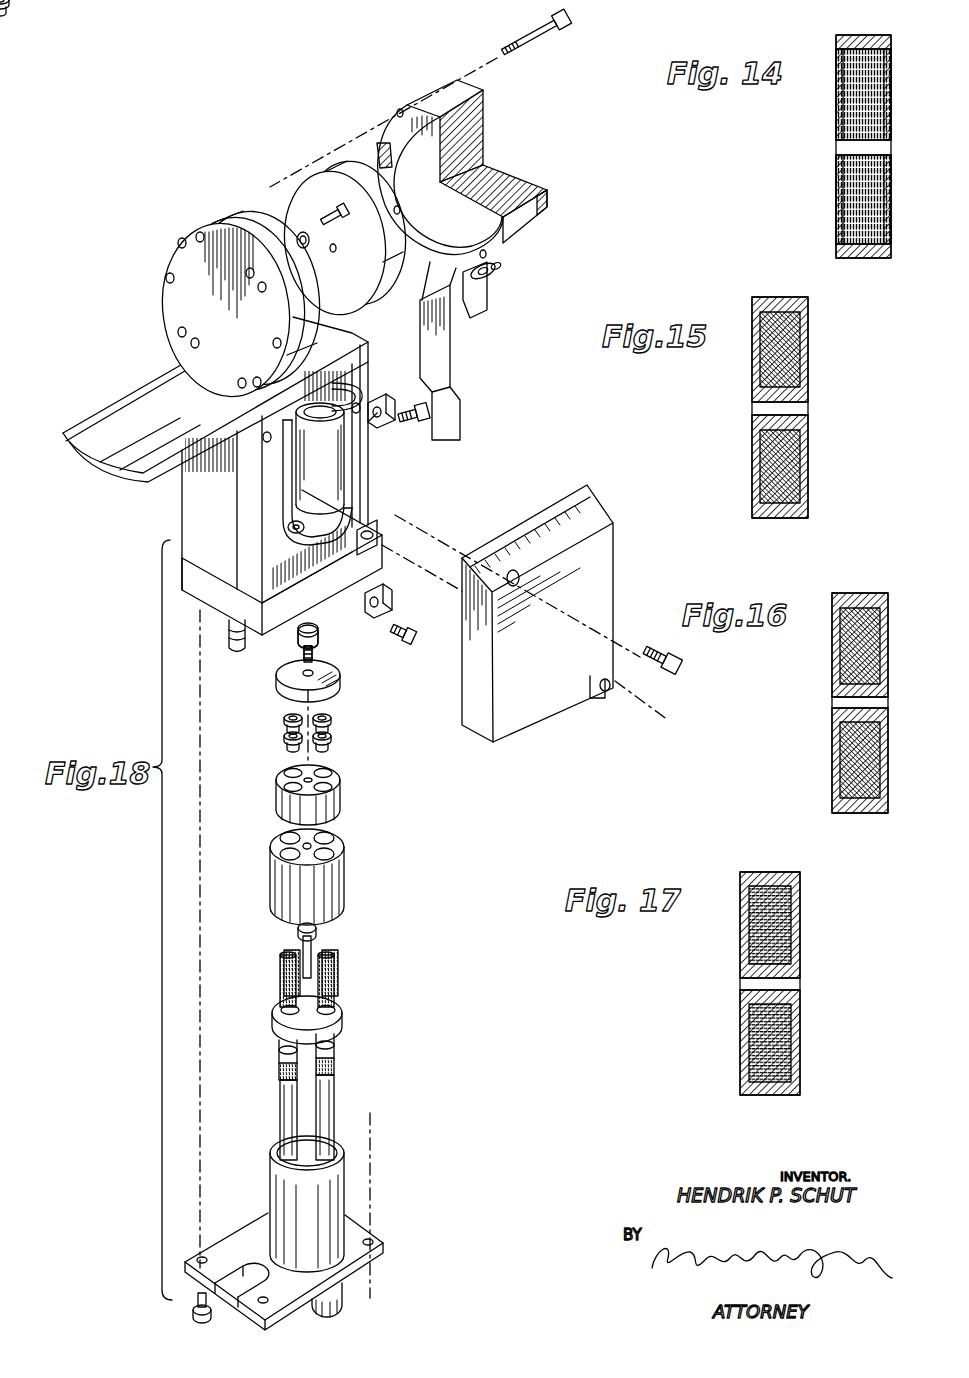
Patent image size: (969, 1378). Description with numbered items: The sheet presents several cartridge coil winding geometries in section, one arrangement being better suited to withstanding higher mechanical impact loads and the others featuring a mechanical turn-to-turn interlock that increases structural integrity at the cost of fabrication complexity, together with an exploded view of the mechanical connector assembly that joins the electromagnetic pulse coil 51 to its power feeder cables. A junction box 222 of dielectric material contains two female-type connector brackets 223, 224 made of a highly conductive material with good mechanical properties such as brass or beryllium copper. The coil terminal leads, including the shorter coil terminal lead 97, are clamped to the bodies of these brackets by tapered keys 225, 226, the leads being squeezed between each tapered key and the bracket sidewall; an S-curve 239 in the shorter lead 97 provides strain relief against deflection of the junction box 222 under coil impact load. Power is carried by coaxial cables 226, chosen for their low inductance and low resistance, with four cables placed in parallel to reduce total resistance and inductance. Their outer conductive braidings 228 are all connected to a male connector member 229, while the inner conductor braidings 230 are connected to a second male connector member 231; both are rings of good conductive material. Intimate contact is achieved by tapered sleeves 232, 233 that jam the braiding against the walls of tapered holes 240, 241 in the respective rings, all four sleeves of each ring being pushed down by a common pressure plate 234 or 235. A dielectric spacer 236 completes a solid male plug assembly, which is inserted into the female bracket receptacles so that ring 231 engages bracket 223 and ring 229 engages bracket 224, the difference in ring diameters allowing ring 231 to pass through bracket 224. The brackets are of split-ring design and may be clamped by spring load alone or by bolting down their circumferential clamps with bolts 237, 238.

The electromagnetic pulse coil 51 is at (427, 184).
The coil terminal lead 97 is at (476, 300).
The S-curve 239 is at (493, 273).
The junction box 222 is at (232, 514).
The female-type connector bracket 223 is at (322, 443).
The female-type connector bracket 224 is at (352, 506).
The tapered key 225 is at (378, 398).
The coaxial power cable 226 is at (393, 597).
The outer conductive braiding 228 is at (336, 990).
The male connector member 229 is at (348, 1204).
The inner conductor braiding 230 is at (330, 952).
The male connector member 231 is at (335, 795).
The tapered sleeve 232 is at (336, 1050).
The tapered sleeve 233 is at (333, 742).
The pressure plate 234 is at (342, 1024).
The pressure plate 235 is at (339, 689).
The spacer 236 is at (340, 886).
The bolt 237 is at (300, 533).
The bolt 238 is at (356, 412).
The tapered hole 240 is at (345, 1150).
The tapered hole 241 is at (332, 777).